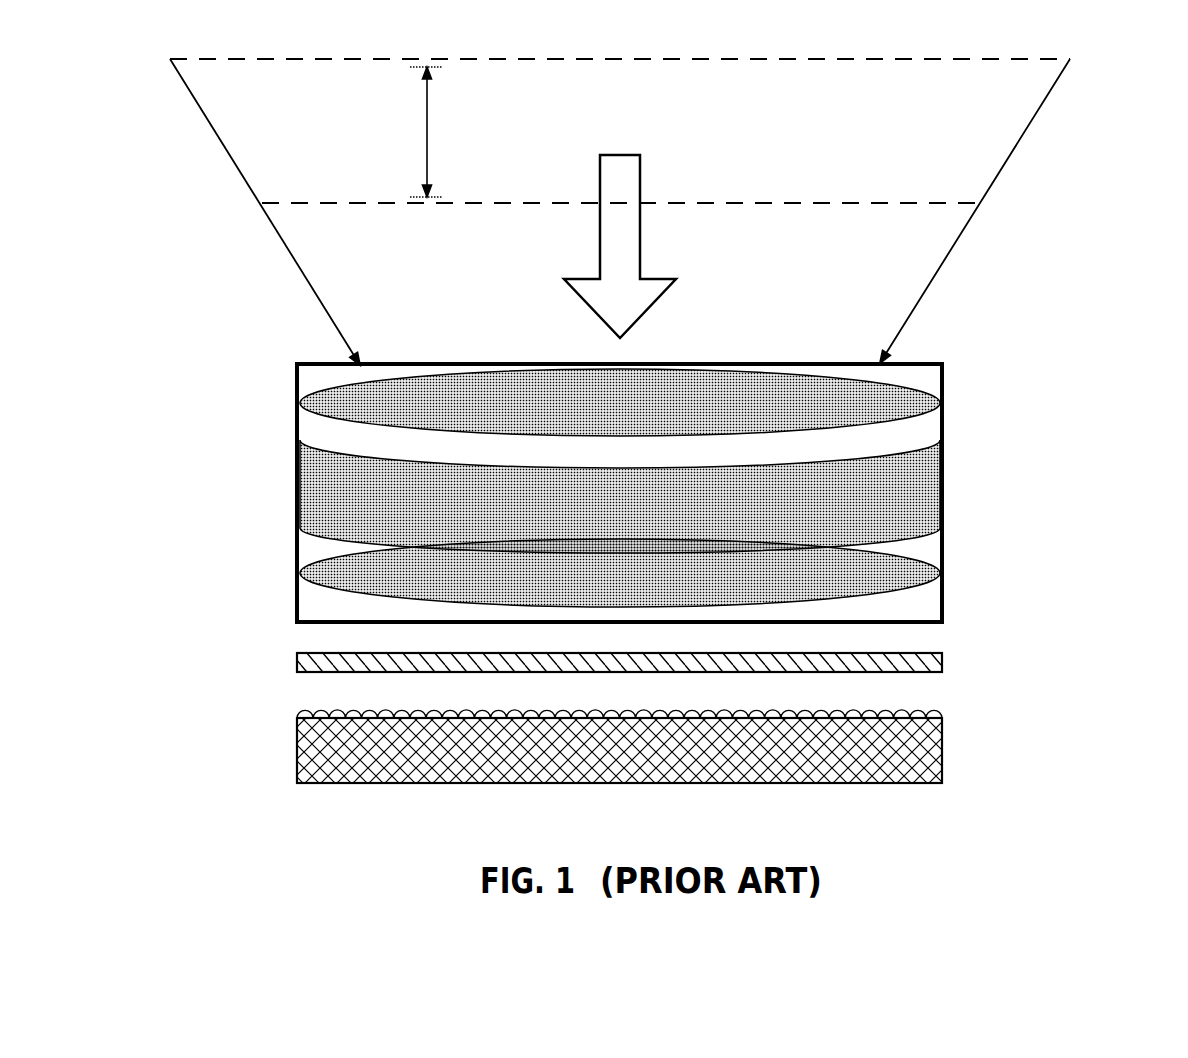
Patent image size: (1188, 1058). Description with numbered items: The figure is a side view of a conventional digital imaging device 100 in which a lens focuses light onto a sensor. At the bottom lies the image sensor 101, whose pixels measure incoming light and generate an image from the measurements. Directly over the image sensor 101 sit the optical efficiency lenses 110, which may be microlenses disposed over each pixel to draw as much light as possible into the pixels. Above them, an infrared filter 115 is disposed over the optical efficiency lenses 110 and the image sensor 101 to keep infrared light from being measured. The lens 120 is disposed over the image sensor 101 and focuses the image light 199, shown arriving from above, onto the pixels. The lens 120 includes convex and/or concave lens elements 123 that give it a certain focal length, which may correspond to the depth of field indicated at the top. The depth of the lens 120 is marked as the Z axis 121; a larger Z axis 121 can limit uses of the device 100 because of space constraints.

The digital imaging device 100 is at (210, 288).
The image light 199 is at (620, 230).
The lens 120 is at (1063, 364).
The lens elements 123 is at (314, 415).
The Z axis 121 is at (995, 364).
The infrared filter 115 is at (943, 664).
The optical efficiency lenses 110 is at (928, 715).
The image sensor 101 is at (922, 762).